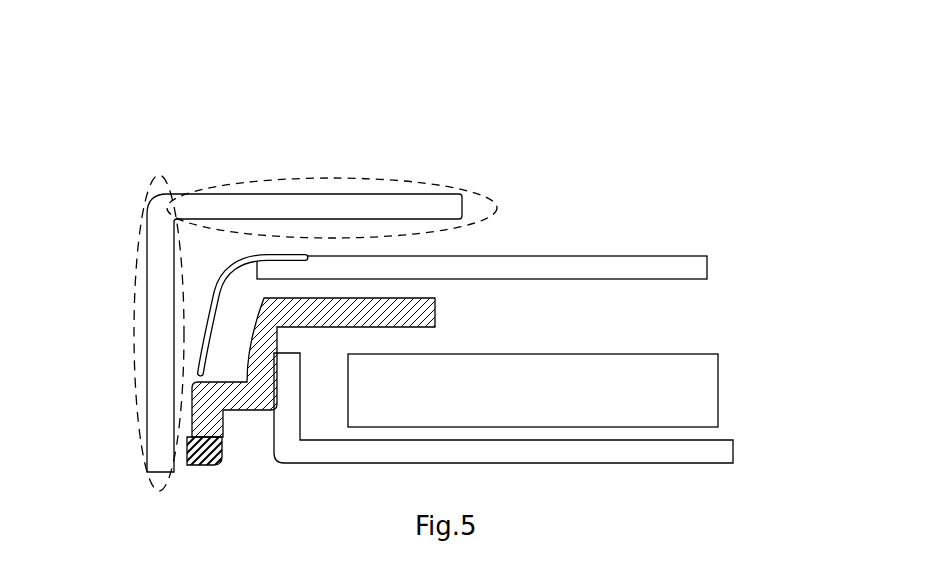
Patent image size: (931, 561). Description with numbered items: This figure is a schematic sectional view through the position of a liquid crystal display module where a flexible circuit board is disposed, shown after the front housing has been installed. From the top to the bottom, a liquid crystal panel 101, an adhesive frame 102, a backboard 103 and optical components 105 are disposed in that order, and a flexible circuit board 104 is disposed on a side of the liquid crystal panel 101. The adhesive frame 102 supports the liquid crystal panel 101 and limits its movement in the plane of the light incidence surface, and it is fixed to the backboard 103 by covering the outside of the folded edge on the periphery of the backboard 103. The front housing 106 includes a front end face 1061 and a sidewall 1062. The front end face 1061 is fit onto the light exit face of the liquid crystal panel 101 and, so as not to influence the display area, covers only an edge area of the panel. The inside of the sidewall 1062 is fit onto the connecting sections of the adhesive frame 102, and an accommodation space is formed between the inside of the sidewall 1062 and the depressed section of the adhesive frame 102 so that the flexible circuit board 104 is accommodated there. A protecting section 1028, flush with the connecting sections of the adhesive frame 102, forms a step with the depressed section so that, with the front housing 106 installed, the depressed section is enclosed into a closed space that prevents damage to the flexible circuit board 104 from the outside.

The liquid crystal panel 101 is at (682, 256).
The adhesive frame 102 is at (436, 300).
The protecting section 1028 is at (195, 418).
The backboard 103 is at (735, 441).
The flexible circuit board 104 is at (230, 257).
The optical components 105 is at (667, 378).
The front housing 106 is at (370, 192).
The front end face 1061 is at (500, 208).
The sidewall 1062 is at (138, 282).